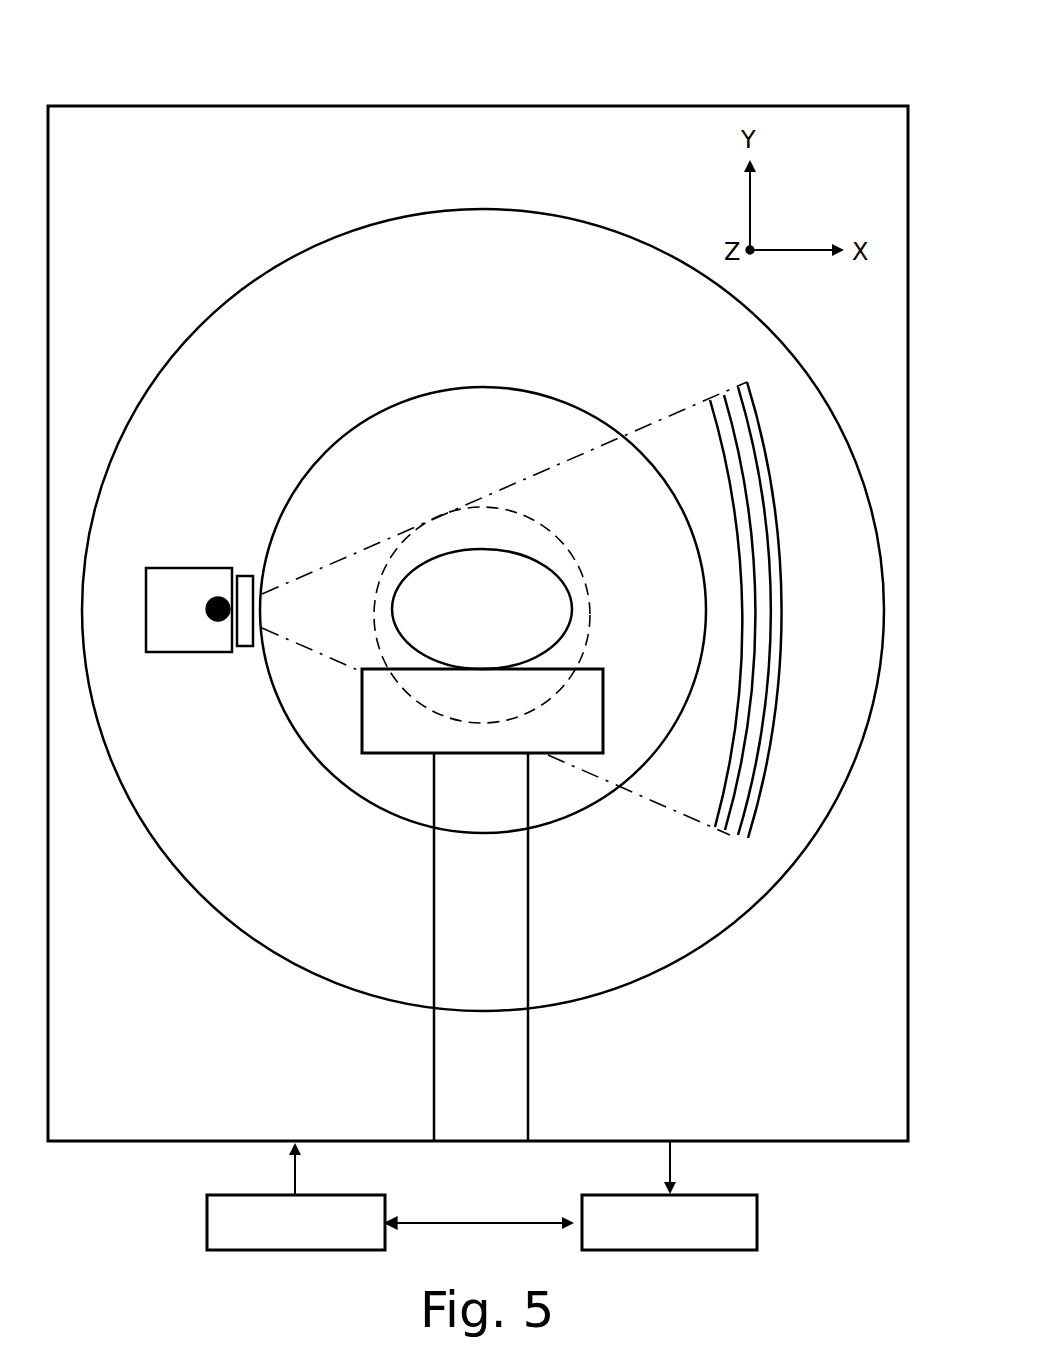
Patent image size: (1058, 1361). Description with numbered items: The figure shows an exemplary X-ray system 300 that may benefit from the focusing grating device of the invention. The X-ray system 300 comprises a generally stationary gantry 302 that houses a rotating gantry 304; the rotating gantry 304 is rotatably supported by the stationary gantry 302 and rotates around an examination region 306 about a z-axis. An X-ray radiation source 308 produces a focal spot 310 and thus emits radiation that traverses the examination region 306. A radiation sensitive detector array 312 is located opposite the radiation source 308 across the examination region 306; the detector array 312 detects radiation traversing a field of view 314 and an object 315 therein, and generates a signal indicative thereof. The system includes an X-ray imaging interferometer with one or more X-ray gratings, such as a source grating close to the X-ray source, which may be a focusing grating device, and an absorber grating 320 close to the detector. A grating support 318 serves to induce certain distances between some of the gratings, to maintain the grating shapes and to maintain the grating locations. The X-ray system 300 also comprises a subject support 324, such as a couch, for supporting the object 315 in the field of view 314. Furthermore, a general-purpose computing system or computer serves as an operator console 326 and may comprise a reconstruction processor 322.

The X-ray system 300 is at (128, 68).
The stationary gantry 302 is at (822, 106).
The rotating gantry 304 is at (245, 288).
The examination region 306 is at (483, 610).
The X-ray radiation source 308 is at (198, 568).
The focal spot 310 is at (208, 620).
The radiation sensitive detector array 312 is at (747, 838).
The field of view 314 is at (570, 548).
The object 315 is at (482, 609).
The grating support 318 is at (246, 576).
The absorber grating 320 is at (715, 827).
The reconstruction processor 322 is at (757, 1222).
The subject support 324 is at (529, 1078).
The operator console 326 is at (207, 1222).